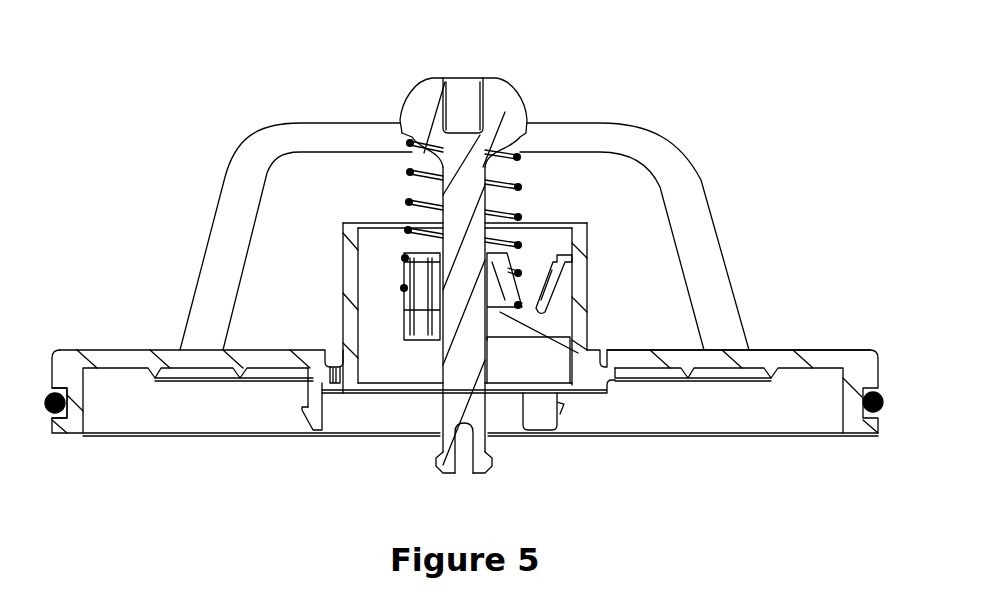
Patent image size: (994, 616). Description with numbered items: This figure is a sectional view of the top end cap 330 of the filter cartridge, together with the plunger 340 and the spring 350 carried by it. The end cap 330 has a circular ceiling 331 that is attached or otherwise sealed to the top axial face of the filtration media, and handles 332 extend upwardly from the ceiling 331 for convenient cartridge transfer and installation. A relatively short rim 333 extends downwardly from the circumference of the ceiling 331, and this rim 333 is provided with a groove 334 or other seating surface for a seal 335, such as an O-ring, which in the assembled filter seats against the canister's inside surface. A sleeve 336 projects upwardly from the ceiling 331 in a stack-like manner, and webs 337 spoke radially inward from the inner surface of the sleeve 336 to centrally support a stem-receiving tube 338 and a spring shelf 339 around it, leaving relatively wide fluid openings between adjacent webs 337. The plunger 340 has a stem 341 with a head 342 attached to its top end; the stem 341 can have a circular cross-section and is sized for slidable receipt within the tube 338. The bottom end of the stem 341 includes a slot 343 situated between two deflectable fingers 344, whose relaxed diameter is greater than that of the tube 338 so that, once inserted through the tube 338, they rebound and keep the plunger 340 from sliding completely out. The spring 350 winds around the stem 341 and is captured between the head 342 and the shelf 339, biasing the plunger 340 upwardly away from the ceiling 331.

The top end cap 330 is at (124, 338).
The circular ceiling 331 is at (784, 348).
The handles 332 is at (622, 140).
The rim 333 is at (55, 388).
The groove 334 is at (55, 412).
The seal 335 is at (883, 392).
The sleeve 336 is at (350, 310).
The webs 337 is at (518, 328).
The stem-receiving tube 338 is at (500, 272).
The spring shelf 339 is at (533, 310).
The plunger 340 is at (525, 75).
The stem 341 is at (463, 340).
The head 342 is at (425, 112).
The slot 343 is at (463, 463).
The deflectable fingers 344 is at (440, 470).
The spring 350 is at (406, 172).